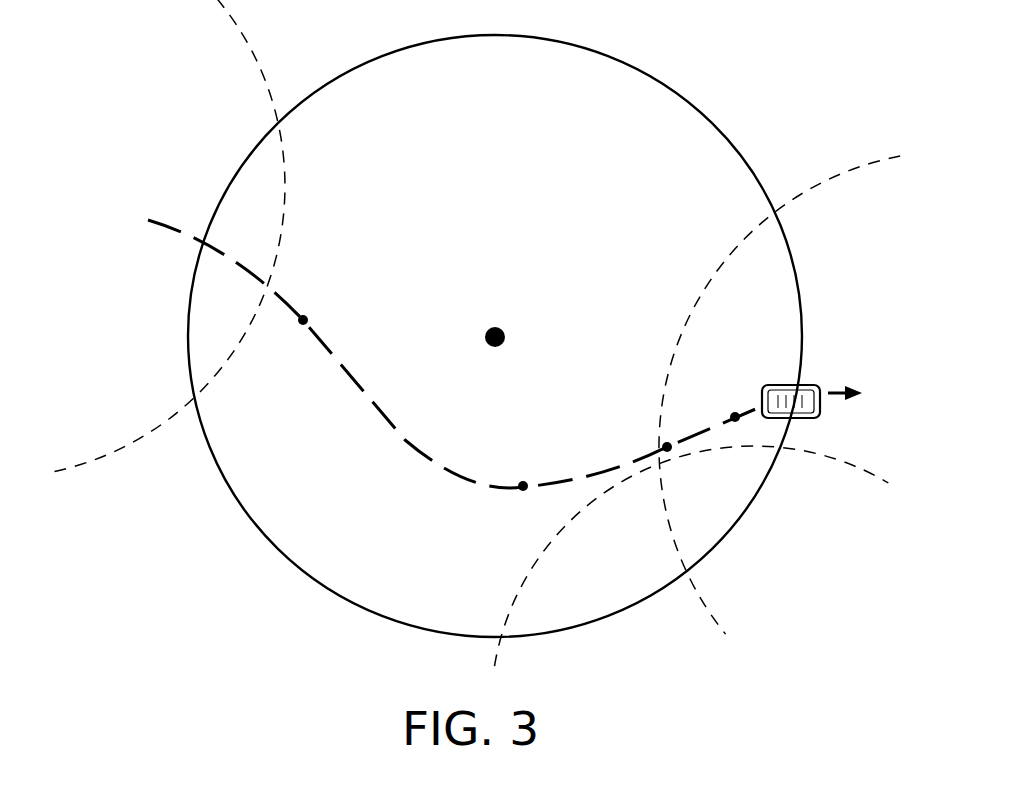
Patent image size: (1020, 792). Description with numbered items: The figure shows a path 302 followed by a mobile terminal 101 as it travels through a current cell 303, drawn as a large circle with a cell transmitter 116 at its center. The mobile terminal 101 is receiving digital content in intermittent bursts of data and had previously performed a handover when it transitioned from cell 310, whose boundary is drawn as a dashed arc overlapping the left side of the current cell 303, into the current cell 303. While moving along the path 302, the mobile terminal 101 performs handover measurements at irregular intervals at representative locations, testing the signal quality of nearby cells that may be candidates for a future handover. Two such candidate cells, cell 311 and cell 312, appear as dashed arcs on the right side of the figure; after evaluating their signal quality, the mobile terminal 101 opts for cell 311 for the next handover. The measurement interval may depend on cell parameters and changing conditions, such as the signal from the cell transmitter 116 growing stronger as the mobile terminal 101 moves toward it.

The mobile terminal 101 is at (818, 388).
The cell transmitter 116 is at (503, 327).
The path 302 is at (405, 440).
The current cell 303 is at (662, 82).
The cell 310 is at (262, 63).
The cell 311 is at (833, 177).
The cell 312 is at (868, 472).